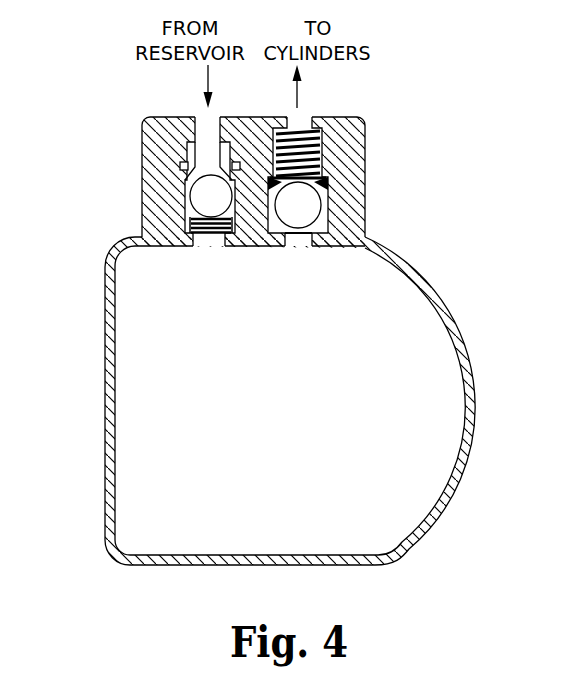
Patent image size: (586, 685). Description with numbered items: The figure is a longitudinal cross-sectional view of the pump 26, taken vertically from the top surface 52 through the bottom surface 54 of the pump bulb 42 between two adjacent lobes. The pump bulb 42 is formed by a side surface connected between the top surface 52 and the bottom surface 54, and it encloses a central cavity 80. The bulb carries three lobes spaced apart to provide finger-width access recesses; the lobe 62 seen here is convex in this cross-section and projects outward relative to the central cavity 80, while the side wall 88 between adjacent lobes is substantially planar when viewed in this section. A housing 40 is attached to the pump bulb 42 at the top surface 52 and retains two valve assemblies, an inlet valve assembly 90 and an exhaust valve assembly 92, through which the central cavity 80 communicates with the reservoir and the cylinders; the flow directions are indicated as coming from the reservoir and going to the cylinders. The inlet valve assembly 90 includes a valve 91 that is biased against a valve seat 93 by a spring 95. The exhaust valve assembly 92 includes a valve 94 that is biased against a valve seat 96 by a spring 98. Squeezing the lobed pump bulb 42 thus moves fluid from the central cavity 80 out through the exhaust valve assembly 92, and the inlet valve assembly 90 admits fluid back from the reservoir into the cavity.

The pump 26 is at (455, 121).
The housing 40 is at (358, 145).
The pump bulb 42 is at (442, 268).
The top surface 52 is at (373, 237).
The bottom surface 54 is at (355, 566).
The second lobe 62 is at (103, 386).
The central cavity 80 is at (227, 519).
The side wall 88 is at (469, 386).
The inlet valve assembly 90 is at (137, 170).
The valve 91 is at (200, 198).
The exhaust valve assembly 92 is at (377, 183).
The valve seat 93 is at (181, 162).
The valve 94 is at (298, 210).
The spring 95 is at (190, 223).
The valve seat 96 is at (318, 228).
The spring 98 is at (325, 145).